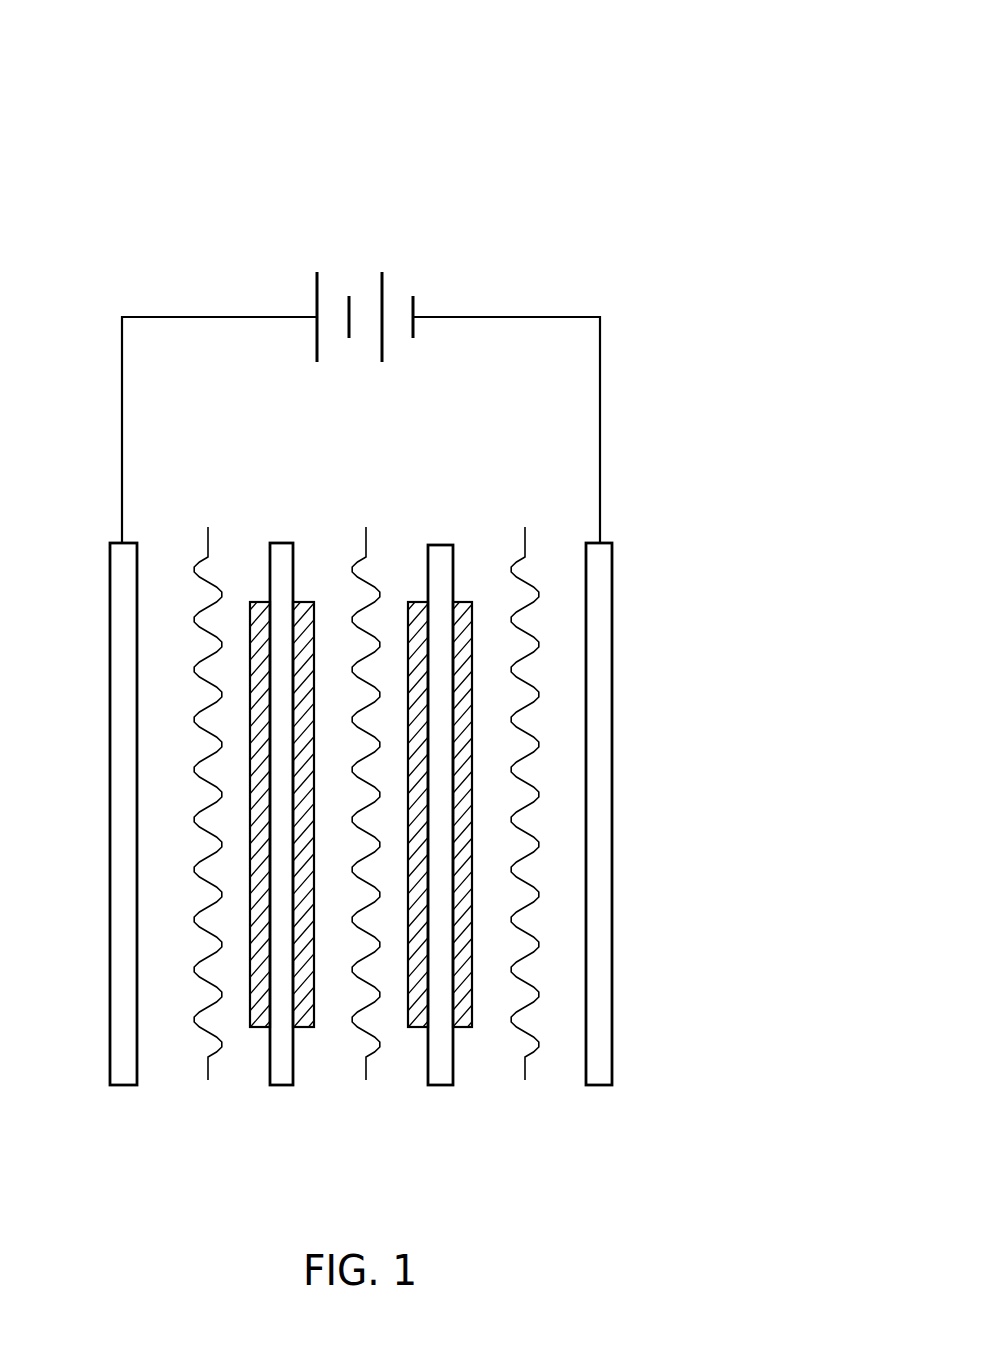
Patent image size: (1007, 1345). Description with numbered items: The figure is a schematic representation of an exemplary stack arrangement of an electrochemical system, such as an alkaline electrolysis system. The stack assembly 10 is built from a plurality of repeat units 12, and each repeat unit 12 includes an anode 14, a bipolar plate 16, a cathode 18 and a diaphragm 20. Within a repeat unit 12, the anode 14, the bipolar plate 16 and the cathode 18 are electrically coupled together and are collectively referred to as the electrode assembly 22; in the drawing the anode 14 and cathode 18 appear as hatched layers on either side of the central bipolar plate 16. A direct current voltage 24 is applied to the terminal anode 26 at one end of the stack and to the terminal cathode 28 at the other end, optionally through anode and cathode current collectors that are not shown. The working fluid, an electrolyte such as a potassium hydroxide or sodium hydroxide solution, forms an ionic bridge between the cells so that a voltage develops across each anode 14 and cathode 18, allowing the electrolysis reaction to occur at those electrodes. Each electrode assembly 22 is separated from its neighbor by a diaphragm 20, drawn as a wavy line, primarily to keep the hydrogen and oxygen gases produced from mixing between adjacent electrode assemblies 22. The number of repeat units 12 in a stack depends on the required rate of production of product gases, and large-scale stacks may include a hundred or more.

The stack assembly 10 is at (593, 67).
The repeat unit 12 is at (530, 512).
The anode 14 is at (415, 1027).
The bipolar plate 16 is at (442, 1085).
The cathode 18 is at (467, 1027).
The diaphragm 20 is at (528, 1080).
The electrode assembly 22 is at (313, 1097).
The direct current voltage 24 is at (417, 278).
The terminal anode 26 is at (118, 847).
The terminal cathode 28 is at (603, 827).